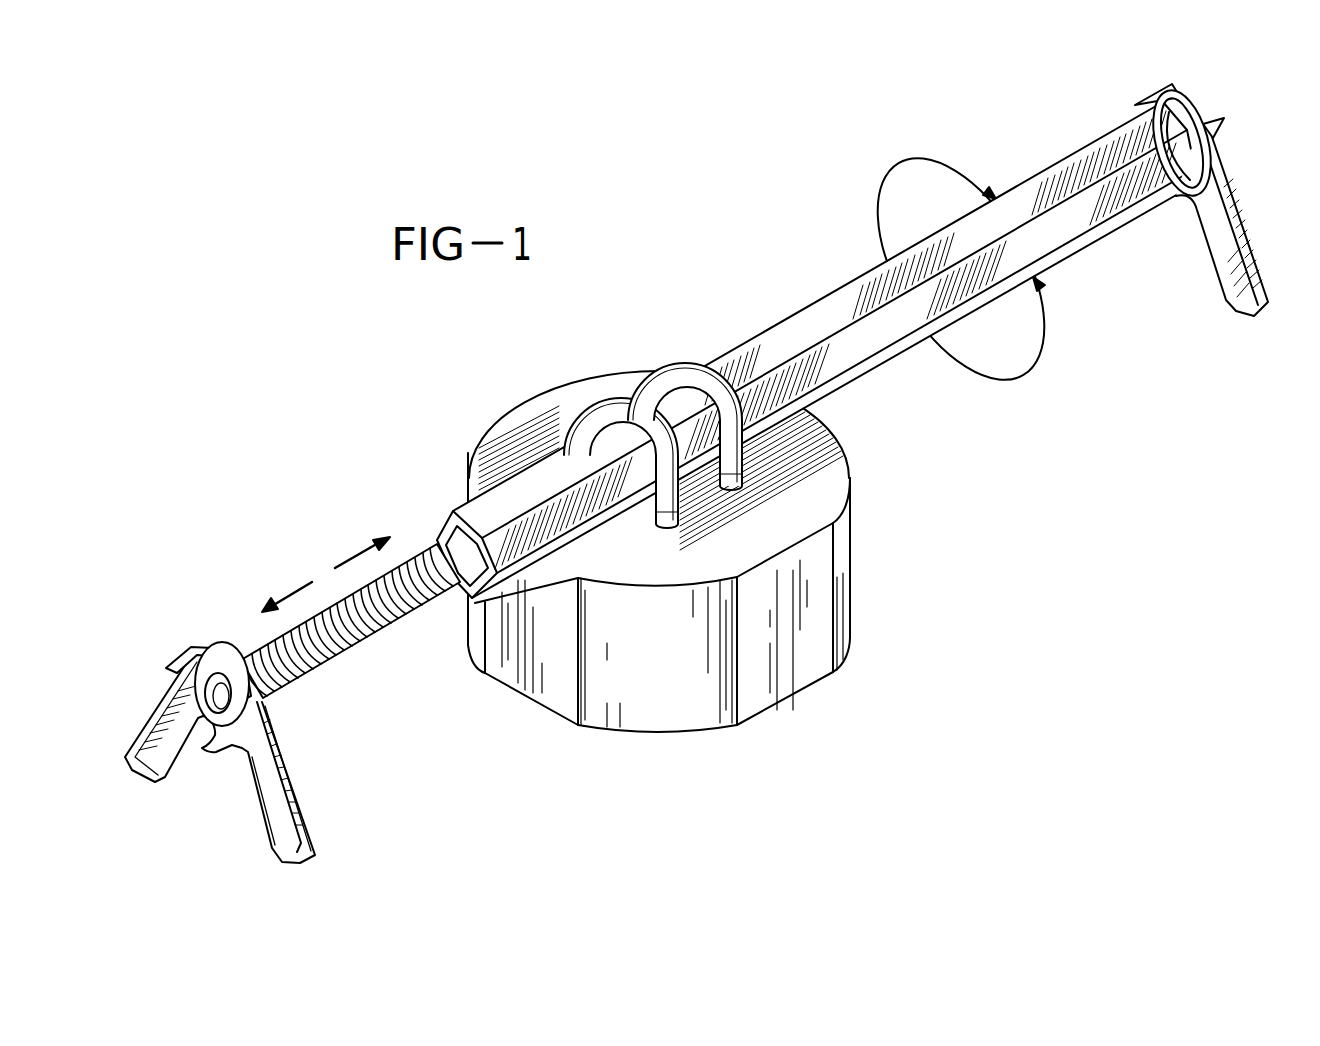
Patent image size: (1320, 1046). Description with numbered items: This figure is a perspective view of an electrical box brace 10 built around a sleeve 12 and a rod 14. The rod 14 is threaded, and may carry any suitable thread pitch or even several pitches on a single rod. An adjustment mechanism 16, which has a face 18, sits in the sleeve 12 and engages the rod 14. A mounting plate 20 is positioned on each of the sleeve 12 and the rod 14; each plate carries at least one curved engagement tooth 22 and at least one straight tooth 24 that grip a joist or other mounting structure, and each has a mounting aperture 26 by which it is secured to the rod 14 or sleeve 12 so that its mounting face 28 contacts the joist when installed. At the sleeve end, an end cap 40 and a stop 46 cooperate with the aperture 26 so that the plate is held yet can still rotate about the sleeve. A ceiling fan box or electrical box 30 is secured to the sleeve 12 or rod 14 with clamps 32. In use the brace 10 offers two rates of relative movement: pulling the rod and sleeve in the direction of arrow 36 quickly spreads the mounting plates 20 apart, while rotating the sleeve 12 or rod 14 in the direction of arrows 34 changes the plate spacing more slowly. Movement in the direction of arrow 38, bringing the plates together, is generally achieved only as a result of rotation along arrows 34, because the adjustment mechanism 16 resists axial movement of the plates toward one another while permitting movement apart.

The electrical box brace 10 is at (694, 461).
The sleeve 12 is at (812, 294).
The rod 14 is at (390, 634).
The adjustment mechanism 16 is at (434, 511).
The face 18 is at (430, 538).
The mounting plates 20 is at (694, 461).
The curved engagement tooth 22 is at (1162, 90).
The straight tooth 24 is at (1190, 97).
The mounting aperture 26 is at (206, 693).
The mounting face 28 is at (142, 724).
The electrical box 30 is at (850, 572).
The clamps 32 is at (665, 362).
The arrows (rotation direction) 34 is at (990, 190).
The arrow (expansion direction) 36 is at (298, 587).
The arrow (contraction direction) 38 is at (357, 560).
The end cap 40 is at (1102, 135).
The stop 46 is at (1178, 146).